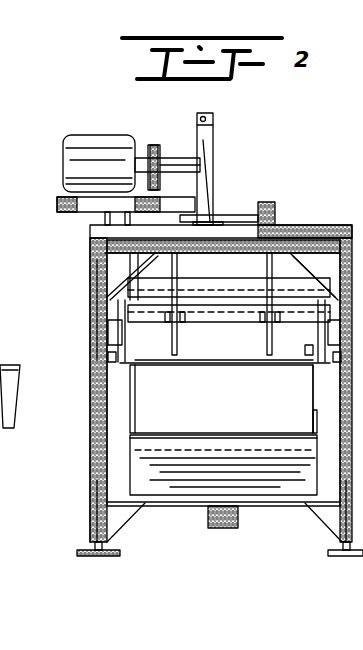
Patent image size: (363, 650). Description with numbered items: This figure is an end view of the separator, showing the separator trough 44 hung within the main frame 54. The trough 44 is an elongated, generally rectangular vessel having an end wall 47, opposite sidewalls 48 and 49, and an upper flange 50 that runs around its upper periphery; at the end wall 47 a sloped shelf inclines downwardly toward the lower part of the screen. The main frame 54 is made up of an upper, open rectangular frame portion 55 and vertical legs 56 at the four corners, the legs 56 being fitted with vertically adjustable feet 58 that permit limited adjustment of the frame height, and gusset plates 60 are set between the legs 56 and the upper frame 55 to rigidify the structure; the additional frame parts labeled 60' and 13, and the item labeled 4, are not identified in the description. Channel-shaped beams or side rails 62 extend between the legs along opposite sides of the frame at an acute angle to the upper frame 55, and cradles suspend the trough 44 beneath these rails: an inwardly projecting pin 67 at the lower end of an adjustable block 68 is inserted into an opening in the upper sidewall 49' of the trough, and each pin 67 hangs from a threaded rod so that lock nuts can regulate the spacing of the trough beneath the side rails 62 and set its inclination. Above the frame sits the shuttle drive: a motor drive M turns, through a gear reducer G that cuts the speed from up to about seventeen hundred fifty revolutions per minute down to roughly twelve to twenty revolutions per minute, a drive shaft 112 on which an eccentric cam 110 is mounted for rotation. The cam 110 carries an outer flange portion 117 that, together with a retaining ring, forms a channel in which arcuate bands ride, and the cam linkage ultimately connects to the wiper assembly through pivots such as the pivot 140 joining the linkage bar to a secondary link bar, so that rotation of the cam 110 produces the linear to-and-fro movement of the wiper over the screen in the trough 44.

The motor drive M is at (65, 160).
The gear reducer G is at (148, 150).
The drive shaft 112 is at (172, 155).
The outer flange portion 117 is at (213, 117).
The eccentric cam 110 is at (213, 142).
The motor mounting plate 13 is at (58, 200).
The pivot 140 is at (275, 210).
The gusset plates 60 is at (201, 370).
The main frame 54 is at (88, 282).
The vertical legs 56 is at (93, 301).
The side rails 62 is at (108, 335).
The inwardly projecting pin 67 is at (110, 357).
The adjustable block 68 is at (318, 300).
The upper sidewall 49' is at (289, 368).
The upper flange 50 is at (322, 358).
The sidewall 49 is at (295, 421).
The sidewall 48 is at (133, 405).
The separator trough 44 is at (143, 420).
The end wall 47 is at (20, 392).
The apparatus 4 is at (7, 456).
The frame leg 60' is at (195, 511).
The vertically adjustable feet 58 is at (92, 547).
The upper frame portion 55 is at (345, 530).